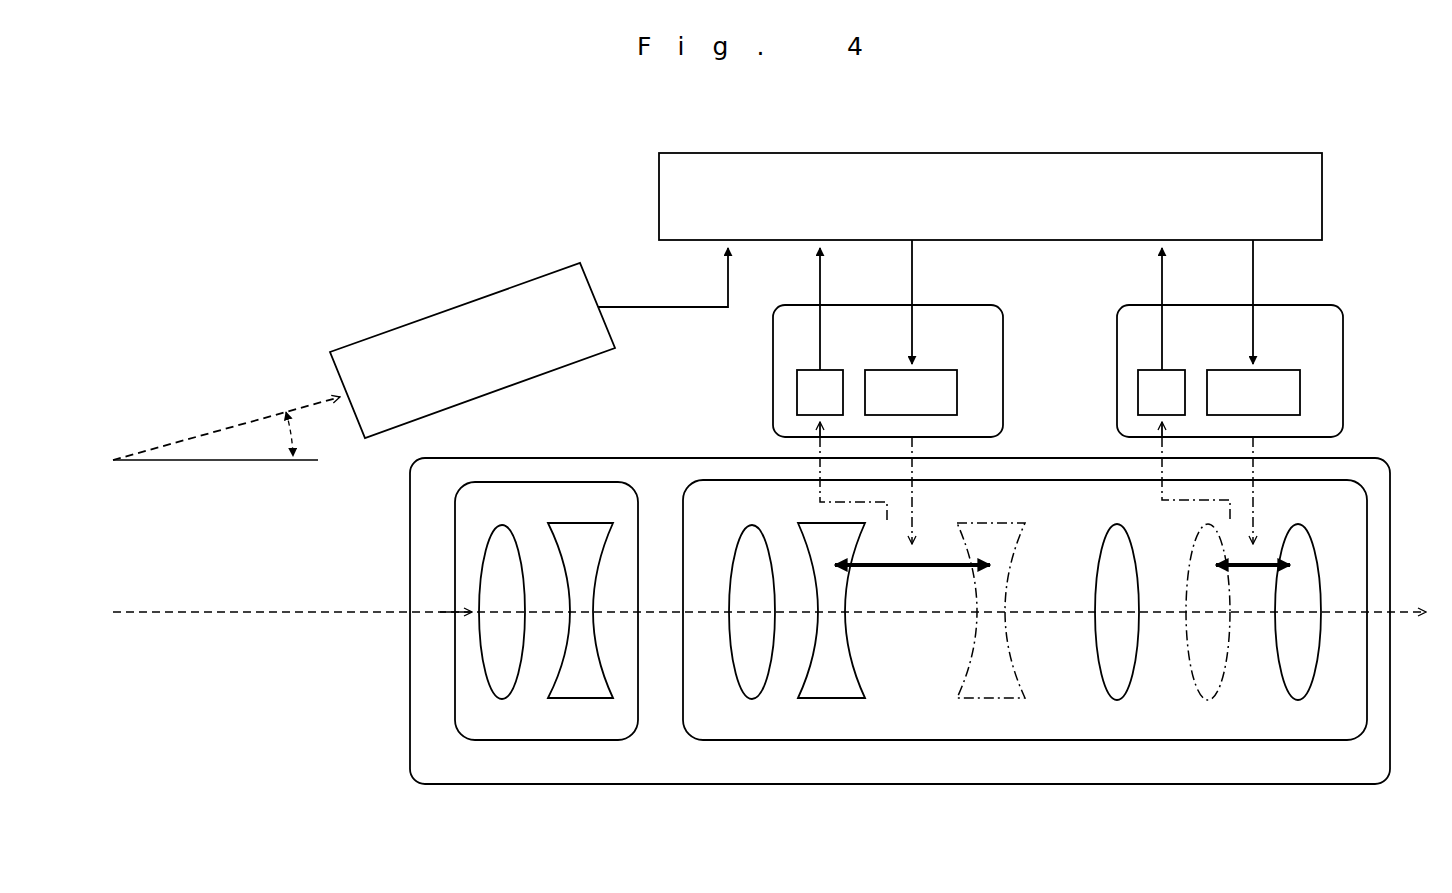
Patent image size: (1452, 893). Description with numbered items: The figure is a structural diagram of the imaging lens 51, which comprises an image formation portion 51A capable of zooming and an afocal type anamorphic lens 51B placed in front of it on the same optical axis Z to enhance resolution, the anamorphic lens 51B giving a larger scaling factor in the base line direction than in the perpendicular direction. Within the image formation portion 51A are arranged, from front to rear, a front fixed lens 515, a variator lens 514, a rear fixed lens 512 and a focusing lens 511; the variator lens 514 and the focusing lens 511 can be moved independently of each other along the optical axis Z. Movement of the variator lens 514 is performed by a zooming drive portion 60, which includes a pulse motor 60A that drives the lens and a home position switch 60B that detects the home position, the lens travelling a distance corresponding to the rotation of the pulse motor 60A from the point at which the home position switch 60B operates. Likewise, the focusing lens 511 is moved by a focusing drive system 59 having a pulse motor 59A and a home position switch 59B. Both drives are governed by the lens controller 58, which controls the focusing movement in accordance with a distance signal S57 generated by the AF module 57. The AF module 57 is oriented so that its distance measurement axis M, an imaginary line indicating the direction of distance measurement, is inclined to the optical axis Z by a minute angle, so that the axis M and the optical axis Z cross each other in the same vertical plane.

The imaging lens 51 is at (410, 678).
The image formation portion 51A is at (1025, 628).
The afocal type anamorphic lens 51B is at (525, 742).
The focusing lens 511 is at (1300, 698).
The rear fixed lens 512 is at (1117, 698).
The variator lens 514 is at (842, 698).
The front fixed lens 515 is at (752, 698).
The AF module 57 is at (423, 315).
The lens controller 58 is at (1322, 177).
The focusing drive system 59 is at (1241, 338).
The pulse motor 59A is at (1280, 370).
The home position switch 59B is at (1178, 370).
The zooming drive portion 60 is at (888, 338).
The pulse motor 60A is at (930, 370).
The home position switch 60B is at (832, 370).
The distance signal S57 is at (650, 310).
The distance measurement axis M is at (182, 437).
The optical axis Z is at (223, 612).